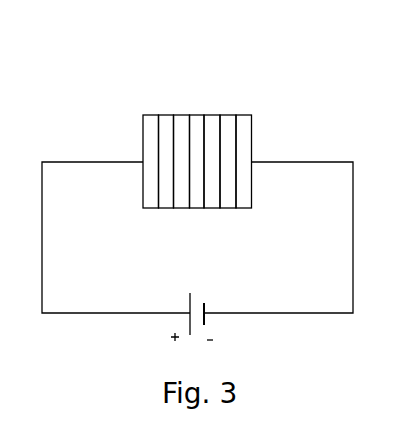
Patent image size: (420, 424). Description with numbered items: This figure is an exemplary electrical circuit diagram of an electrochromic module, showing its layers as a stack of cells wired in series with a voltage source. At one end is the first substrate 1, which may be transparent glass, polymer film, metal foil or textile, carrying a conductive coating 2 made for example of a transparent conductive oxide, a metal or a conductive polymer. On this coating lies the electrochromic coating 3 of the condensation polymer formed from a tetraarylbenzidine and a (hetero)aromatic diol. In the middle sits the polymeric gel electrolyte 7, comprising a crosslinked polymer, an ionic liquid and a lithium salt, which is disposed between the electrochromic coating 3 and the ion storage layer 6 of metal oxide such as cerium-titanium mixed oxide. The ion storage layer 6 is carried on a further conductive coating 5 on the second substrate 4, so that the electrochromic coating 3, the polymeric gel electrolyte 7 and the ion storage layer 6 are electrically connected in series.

The first substrate 1 is at (148, 115).
The conductive coating 2 is at (165, 115).
The electrochromic coating 3 is at (182, 208).
The second substrate 4 is at (247, 115).
The conductive coating 5 is at (230, 115).
The ion storage layer 6 is at (212, 208).
The polymeric gel electrolyte 7 is at (196, 115).